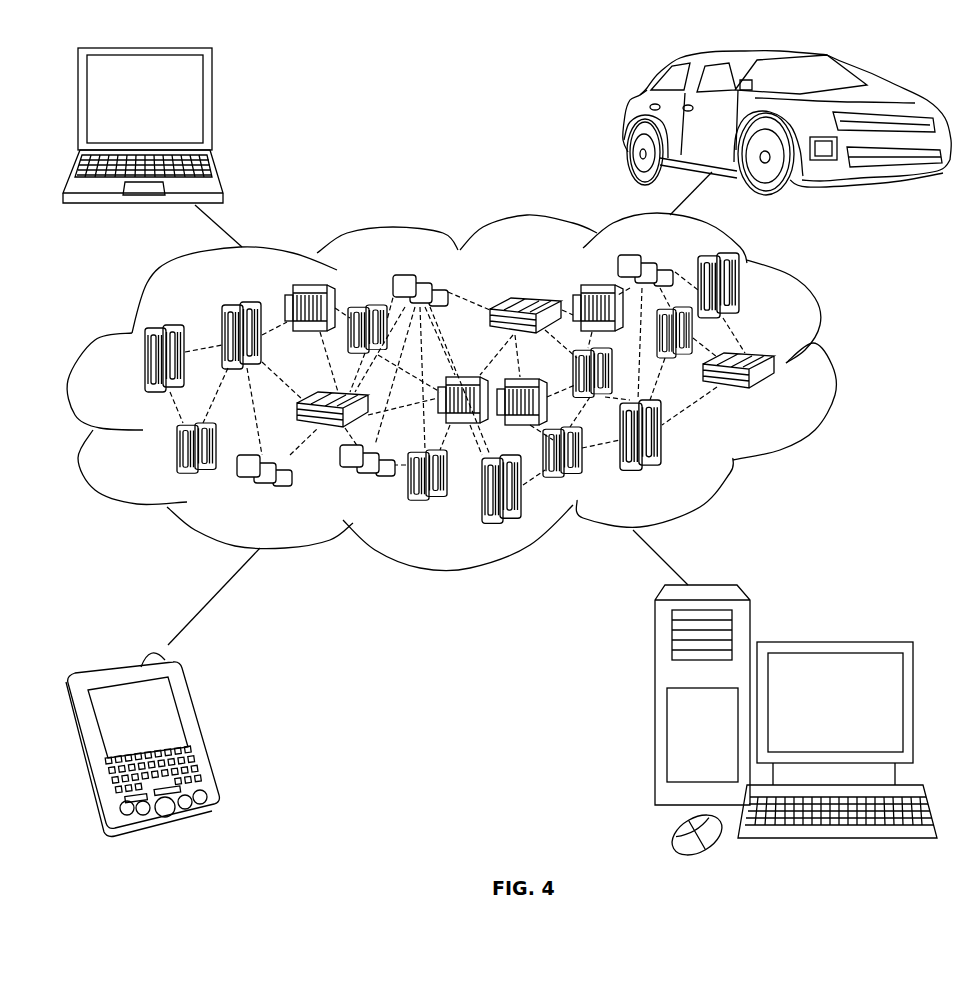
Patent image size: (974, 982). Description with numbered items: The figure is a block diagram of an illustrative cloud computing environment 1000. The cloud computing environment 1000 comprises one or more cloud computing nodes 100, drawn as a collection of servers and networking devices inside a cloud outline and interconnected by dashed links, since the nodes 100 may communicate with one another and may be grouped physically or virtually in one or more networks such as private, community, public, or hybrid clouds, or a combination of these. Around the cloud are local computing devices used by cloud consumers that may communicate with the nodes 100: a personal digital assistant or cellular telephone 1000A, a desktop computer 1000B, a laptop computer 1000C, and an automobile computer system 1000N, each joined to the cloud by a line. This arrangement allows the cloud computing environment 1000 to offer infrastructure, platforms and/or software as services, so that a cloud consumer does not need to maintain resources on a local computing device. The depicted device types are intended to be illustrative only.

The cloud computing nodes 100 is at (782, 399).
The cloud computing environment 1000 is at (833, 367).
The personal digital assistant or cellular telephone 1000A is at (200, 729).
The desktop computer 1000B is at (833, 641).
The laptop computer 1000C is at (215, 108).
The automobile computer system 1000N is at (622, 123).